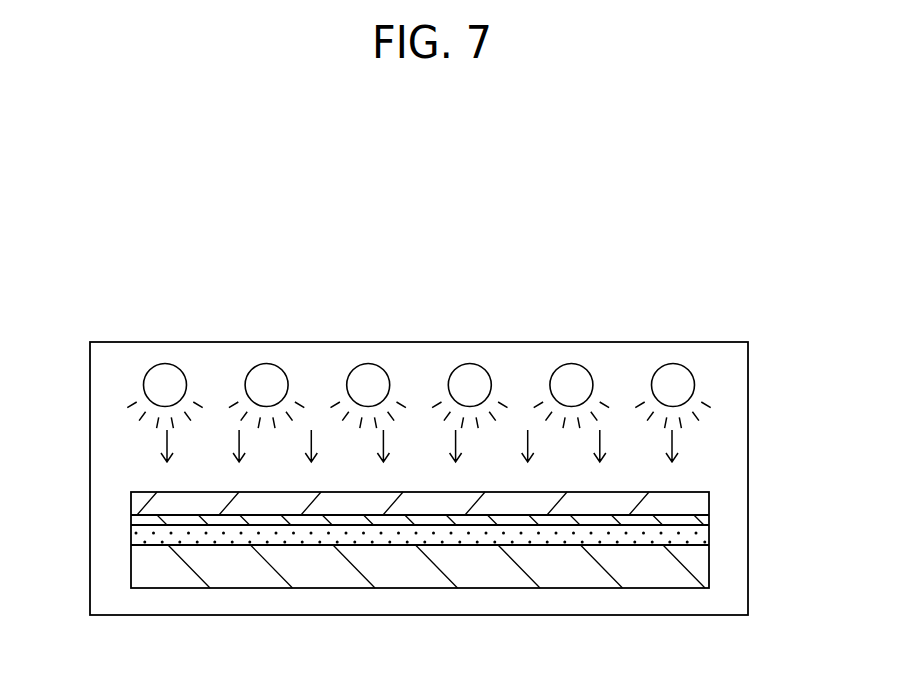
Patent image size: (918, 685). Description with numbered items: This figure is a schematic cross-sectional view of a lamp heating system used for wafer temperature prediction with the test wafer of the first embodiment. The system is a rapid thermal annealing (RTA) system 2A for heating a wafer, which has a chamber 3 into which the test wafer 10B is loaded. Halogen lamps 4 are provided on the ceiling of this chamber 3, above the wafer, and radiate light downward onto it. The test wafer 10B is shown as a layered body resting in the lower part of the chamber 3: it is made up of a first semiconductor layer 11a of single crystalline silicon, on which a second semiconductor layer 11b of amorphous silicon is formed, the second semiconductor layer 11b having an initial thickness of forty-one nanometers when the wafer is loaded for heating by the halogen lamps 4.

The rapid thermal annealing (RTA) system 2A is at (128, 272).
The chamber 3 is at (748, 377).
The halogen lamps 4 is at (257, 365).
The test wafer 10B is at (447, 542).
The first semiconductor layer 11a is at (131, 574).
The second semiconductor layer 11b is at (131, 537).